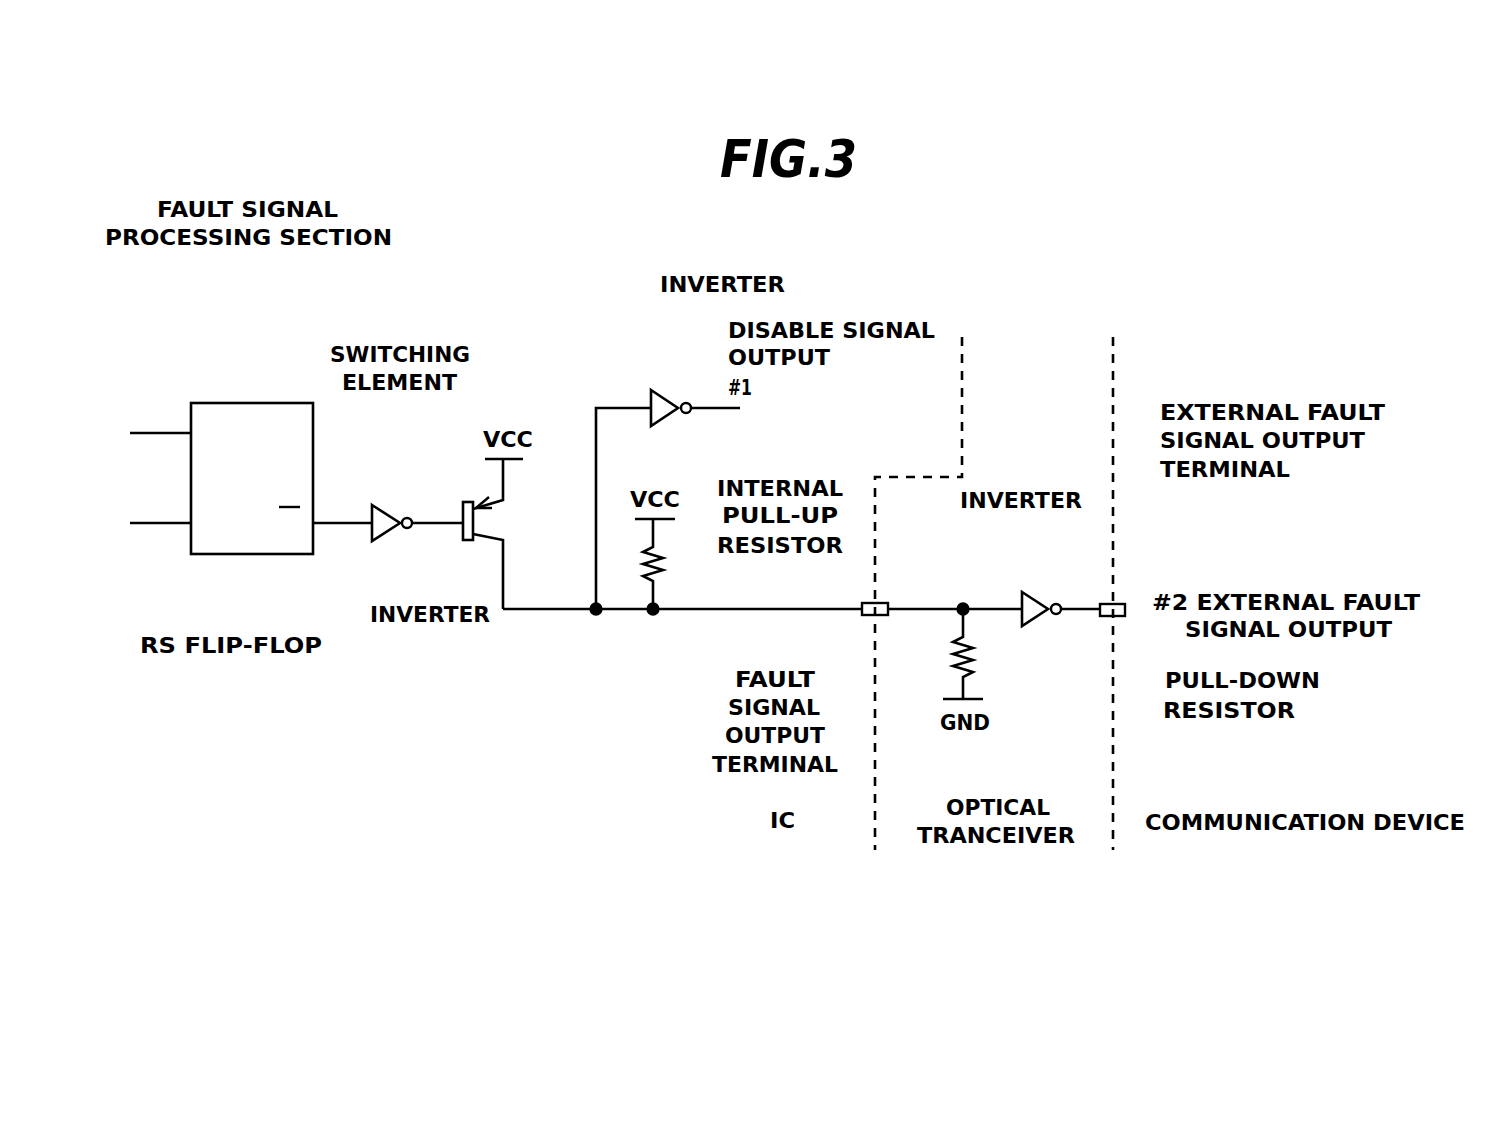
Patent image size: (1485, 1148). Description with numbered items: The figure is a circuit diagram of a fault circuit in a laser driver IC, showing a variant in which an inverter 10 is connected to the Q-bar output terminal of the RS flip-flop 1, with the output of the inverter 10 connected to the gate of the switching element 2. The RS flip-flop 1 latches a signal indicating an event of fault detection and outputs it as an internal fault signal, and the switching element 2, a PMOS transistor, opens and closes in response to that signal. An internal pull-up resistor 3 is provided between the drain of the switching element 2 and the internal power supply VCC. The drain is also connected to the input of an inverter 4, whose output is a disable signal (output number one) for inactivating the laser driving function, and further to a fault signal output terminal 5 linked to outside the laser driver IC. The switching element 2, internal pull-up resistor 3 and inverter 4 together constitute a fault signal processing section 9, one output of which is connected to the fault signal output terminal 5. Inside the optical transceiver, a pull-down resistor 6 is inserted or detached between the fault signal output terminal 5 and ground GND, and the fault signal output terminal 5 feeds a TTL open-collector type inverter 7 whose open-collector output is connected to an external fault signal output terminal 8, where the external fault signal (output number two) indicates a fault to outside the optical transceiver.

The RS flip-flop 1 is at (250, 555).
The switching element 2 is at (463, 506).
The internal pull-up resistor 3 is at (665, 568).
The inverter 4 is at (665, 390).
The fault signal output terminal 5 is at (858, 614).
The pull-down resistor 6 is at (973, 657).
The inverter 7 is at (1038, 592).
The external fault signal output terminal 8 is at (1120, 604).
The fault signal processing section 9 is at (292, 337).
The inverter 10 is at (385, 537).